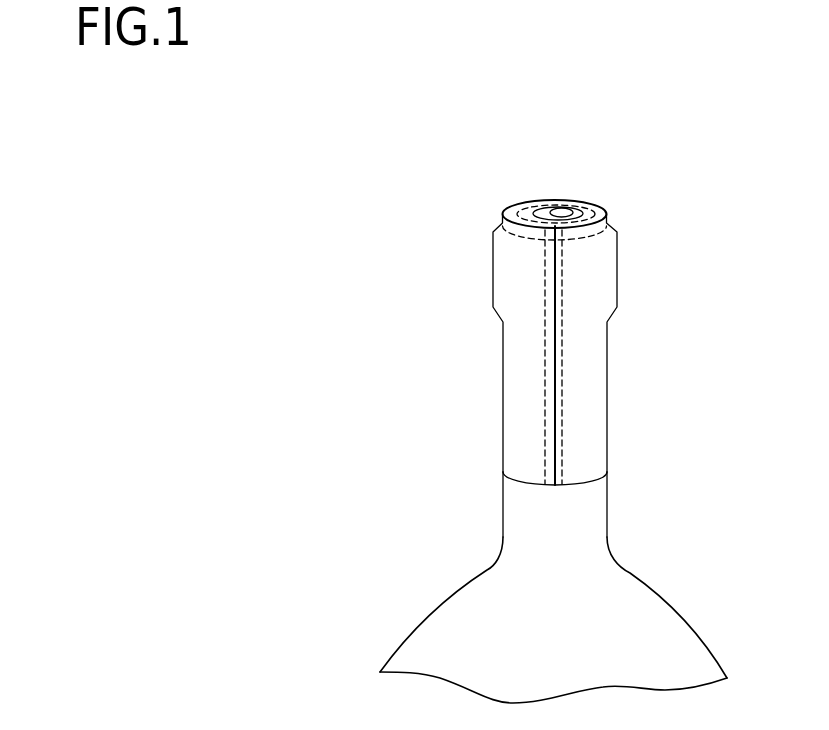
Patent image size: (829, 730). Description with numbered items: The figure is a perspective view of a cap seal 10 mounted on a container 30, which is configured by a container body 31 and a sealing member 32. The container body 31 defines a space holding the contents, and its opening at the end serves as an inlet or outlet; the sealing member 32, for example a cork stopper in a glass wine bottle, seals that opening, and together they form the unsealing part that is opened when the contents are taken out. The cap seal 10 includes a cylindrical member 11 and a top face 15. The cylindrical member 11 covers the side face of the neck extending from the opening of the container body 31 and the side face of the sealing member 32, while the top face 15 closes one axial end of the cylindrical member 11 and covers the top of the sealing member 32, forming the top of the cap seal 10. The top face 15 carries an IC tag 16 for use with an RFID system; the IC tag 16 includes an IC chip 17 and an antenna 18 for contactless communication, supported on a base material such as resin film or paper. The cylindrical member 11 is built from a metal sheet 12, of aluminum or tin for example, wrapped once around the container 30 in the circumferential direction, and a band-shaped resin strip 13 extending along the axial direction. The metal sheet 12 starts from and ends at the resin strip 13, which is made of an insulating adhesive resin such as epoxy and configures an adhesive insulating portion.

The cap seal 10 is at (470, 150).
The cylindrical member 11 is at (502, 382).
The metal sheet 12 is at (601, 450).
The resin strip 13 is at (558, 424).
The top face 15 is at (506, 205).
The IC tag 16 is at (657, 138).
The IC chip 17 is at (576, 205).
The antenna 18 is at (557, 208).
The container 30 is at (422, 575).
The container body 31 is at (686, 603).
The sealing member 32 is at (608, 216).